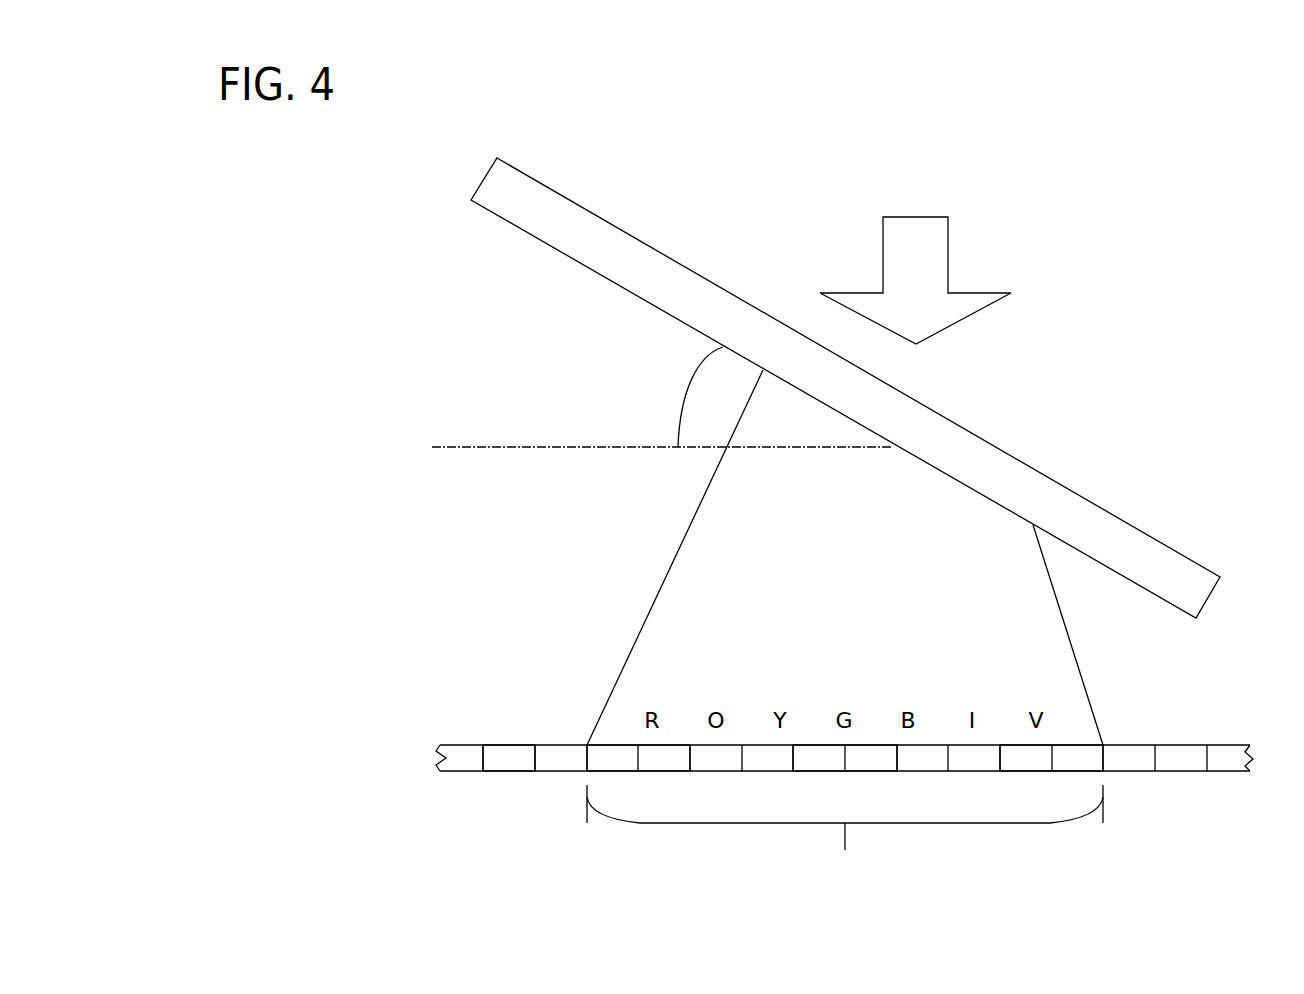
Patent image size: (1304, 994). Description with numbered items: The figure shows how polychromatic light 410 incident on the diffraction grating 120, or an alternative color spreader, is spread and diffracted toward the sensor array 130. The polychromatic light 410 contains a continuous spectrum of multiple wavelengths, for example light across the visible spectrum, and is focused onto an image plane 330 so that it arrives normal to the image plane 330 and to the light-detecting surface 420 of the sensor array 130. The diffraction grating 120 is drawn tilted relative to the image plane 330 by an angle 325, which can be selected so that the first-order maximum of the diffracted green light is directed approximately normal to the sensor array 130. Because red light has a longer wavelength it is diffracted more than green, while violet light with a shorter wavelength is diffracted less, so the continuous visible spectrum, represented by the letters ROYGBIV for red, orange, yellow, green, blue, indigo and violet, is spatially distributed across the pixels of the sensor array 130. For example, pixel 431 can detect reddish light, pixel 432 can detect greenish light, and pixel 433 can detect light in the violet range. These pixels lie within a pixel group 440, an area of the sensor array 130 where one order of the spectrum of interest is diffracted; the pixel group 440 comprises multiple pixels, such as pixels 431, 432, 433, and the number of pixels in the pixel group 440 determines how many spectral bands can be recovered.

The diffraction grating 120 is at (1144, 486).
The sensor array 130 is at (1229, 723).
The angle 325 is at (677, 397).
The image plane 330 is at (502, 448).
The polychromatic light 410 is at (920, 254).
The light-detecting surface 420 is at (525, 728).
The pixel 431 is at (612, 763).
The pixel 432 is at (822, 763).
The pixel 433 is at (1091, 763).
The pixel group 440 is at (845, 835).